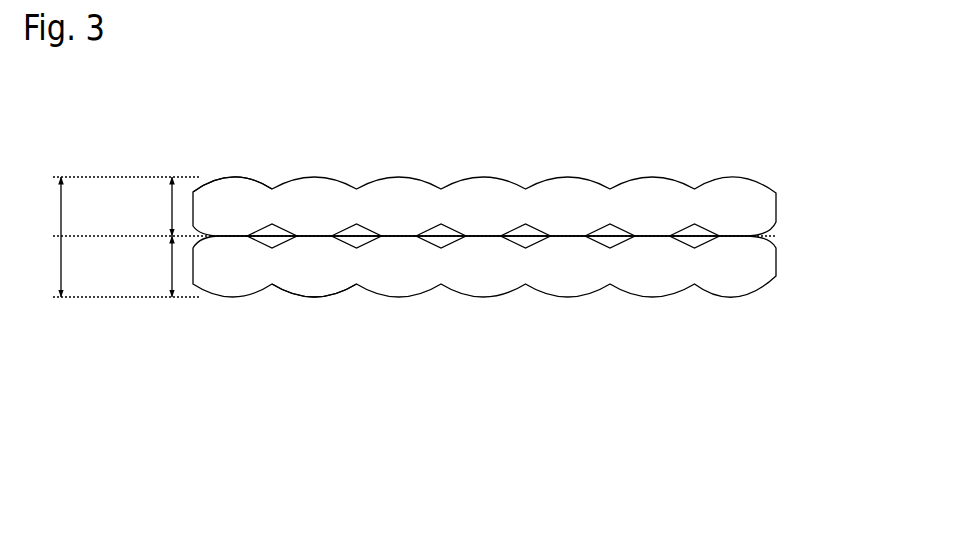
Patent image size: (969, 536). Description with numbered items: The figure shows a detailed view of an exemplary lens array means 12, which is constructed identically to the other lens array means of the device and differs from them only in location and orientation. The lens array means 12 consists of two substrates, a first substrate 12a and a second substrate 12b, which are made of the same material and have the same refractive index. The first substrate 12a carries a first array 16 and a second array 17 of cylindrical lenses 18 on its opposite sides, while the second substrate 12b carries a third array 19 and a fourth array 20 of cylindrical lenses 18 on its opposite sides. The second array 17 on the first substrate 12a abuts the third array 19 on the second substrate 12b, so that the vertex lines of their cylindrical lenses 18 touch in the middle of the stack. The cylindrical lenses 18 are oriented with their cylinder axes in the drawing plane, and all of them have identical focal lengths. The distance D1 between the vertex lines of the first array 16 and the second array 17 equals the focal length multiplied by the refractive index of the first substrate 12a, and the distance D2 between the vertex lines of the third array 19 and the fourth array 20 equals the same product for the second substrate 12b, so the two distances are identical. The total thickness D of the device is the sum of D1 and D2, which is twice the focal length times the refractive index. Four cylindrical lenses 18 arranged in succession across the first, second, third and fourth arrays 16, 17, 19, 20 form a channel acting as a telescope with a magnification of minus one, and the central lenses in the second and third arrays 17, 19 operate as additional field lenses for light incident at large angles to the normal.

The lens array means 12 is at (515, 332).
The first substrate 12a is at (782, 192).
The second substrate 12b is at (783, 278).
The first array 16 is at (236, 173).
The second array 17 is at (274, 232).
The cylindrical lenses 18 is at (537, 227).
The third array 19 is at (358, 232).
The fourth array 20 is at (312, 300).
The total thickness D is at (45, 285).
The distance D1 is at (172, 209).
The distance D2 is at (172, 265).